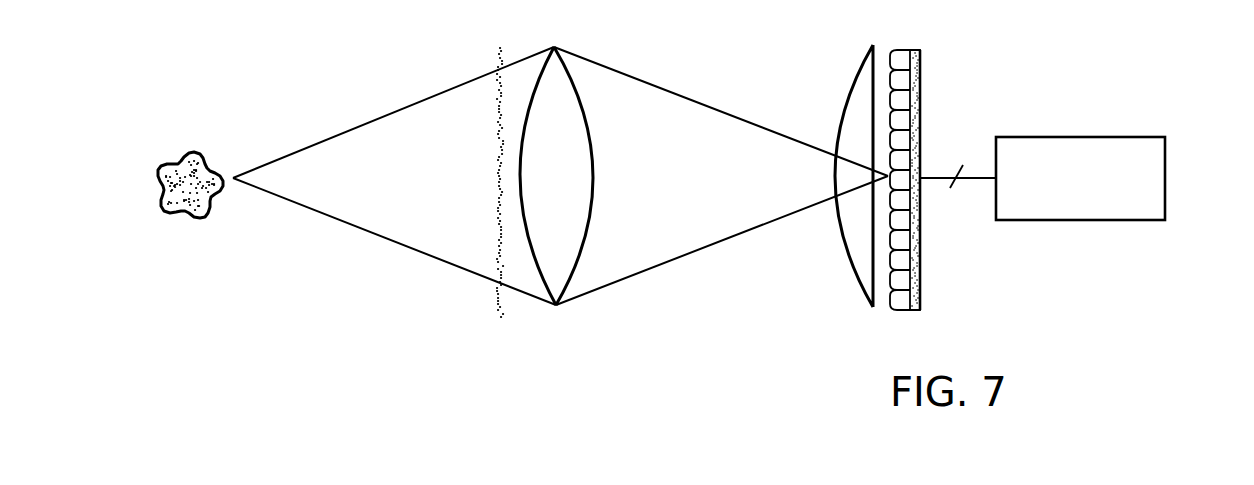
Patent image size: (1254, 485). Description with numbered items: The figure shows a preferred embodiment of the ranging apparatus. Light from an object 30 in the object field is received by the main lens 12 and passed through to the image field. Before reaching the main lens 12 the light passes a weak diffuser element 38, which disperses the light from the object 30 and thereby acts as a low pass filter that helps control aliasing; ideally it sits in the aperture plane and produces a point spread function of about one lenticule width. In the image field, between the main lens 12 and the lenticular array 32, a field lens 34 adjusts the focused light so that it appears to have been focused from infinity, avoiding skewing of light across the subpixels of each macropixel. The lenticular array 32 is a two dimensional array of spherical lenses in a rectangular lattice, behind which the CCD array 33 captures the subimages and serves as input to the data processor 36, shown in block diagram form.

The main lens 12 is at (562, 77).
The object 30 is at (207, 153).
The lenticular array 32 is at (902, 50).
The CCD array 33 is at (921, 72).
The field lens 34 is at (853, 82).
The data processor 36 is at (1165, 207).
The weak diffuser element 38 is at (502, 295).